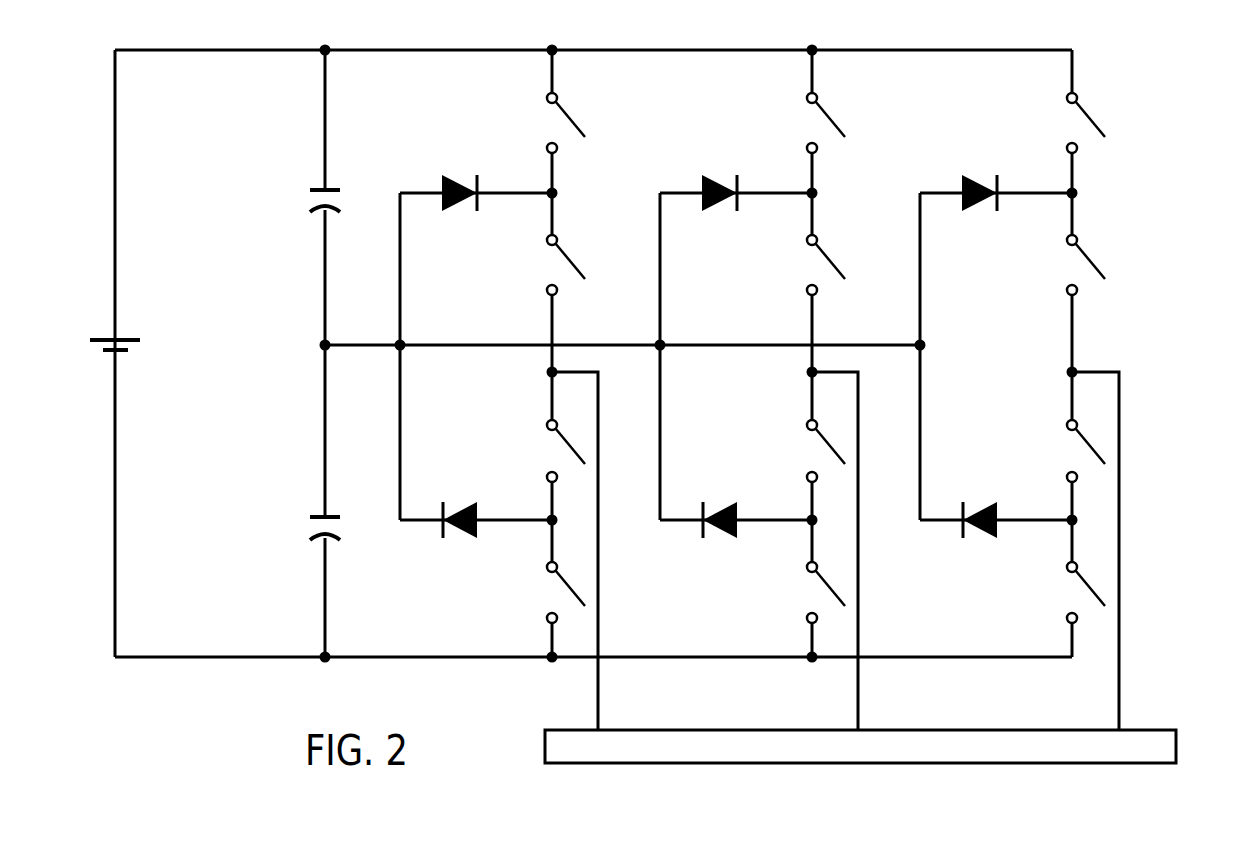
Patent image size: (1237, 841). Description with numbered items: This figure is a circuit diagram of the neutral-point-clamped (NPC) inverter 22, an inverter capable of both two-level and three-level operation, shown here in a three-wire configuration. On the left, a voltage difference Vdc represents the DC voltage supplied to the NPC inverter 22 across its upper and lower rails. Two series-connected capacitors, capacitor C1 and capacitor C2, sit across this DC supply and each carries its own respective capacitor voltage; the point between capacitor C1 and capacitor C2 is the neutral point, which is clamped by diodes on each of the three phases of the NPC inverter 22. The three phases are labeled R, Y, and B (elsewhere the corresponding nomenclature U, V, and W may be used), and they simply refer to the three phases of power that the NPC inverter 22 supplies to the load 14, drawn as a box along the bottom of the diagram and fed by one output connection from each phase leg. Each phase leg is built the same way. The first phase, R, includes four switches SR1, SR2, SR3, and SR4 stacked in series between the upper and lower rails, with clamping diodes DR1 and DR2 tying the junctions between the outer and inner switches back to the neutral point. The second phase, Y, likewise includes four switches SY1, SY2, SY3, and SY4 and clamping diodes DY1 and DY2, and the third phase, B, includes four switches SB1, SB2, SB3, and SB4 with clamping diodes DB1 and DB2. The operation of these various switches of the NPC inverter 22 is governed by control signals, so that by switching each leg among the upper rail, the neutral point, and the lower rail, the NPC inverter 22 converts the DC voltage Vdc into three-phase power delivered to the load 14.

The NPC inverter 22 is at (1158, 91).
The load 14 is at (1176, 744).
The voltage difference Vdc is at (92, 343).
The capacitor C1 is at (317, 203).
The capacitor C2 is at (316, 527).
The switch SR1 is at (545, 123).
The switch SR2 is at (545, 265).
The switch SR3 is at (545, 451).
The switch SR4 is at (545, 592).
The switch SY1 is at (805, 123).
The switch SY2 is at (805, 265).
The switch SY3 is at (805, 451).
The switch SY4 is at (805, 592).
The switch SB1 is at (1065, 123).
The switch SB2 is at (1065, 265).
The switch SB3 is at (1065, 451).
The switch SB4 is at (1065, 592).
The clamping diode DR1 is at (438, 189).
The clamping diode DR2 is at (438, 528).
The clamping diode DY1 is at (698, 189).
The clamping diode DY2 is at (698, 528).
The clamping diode DB1 is at (958, 189).
The clamping diode DB2 is at (958, 528).